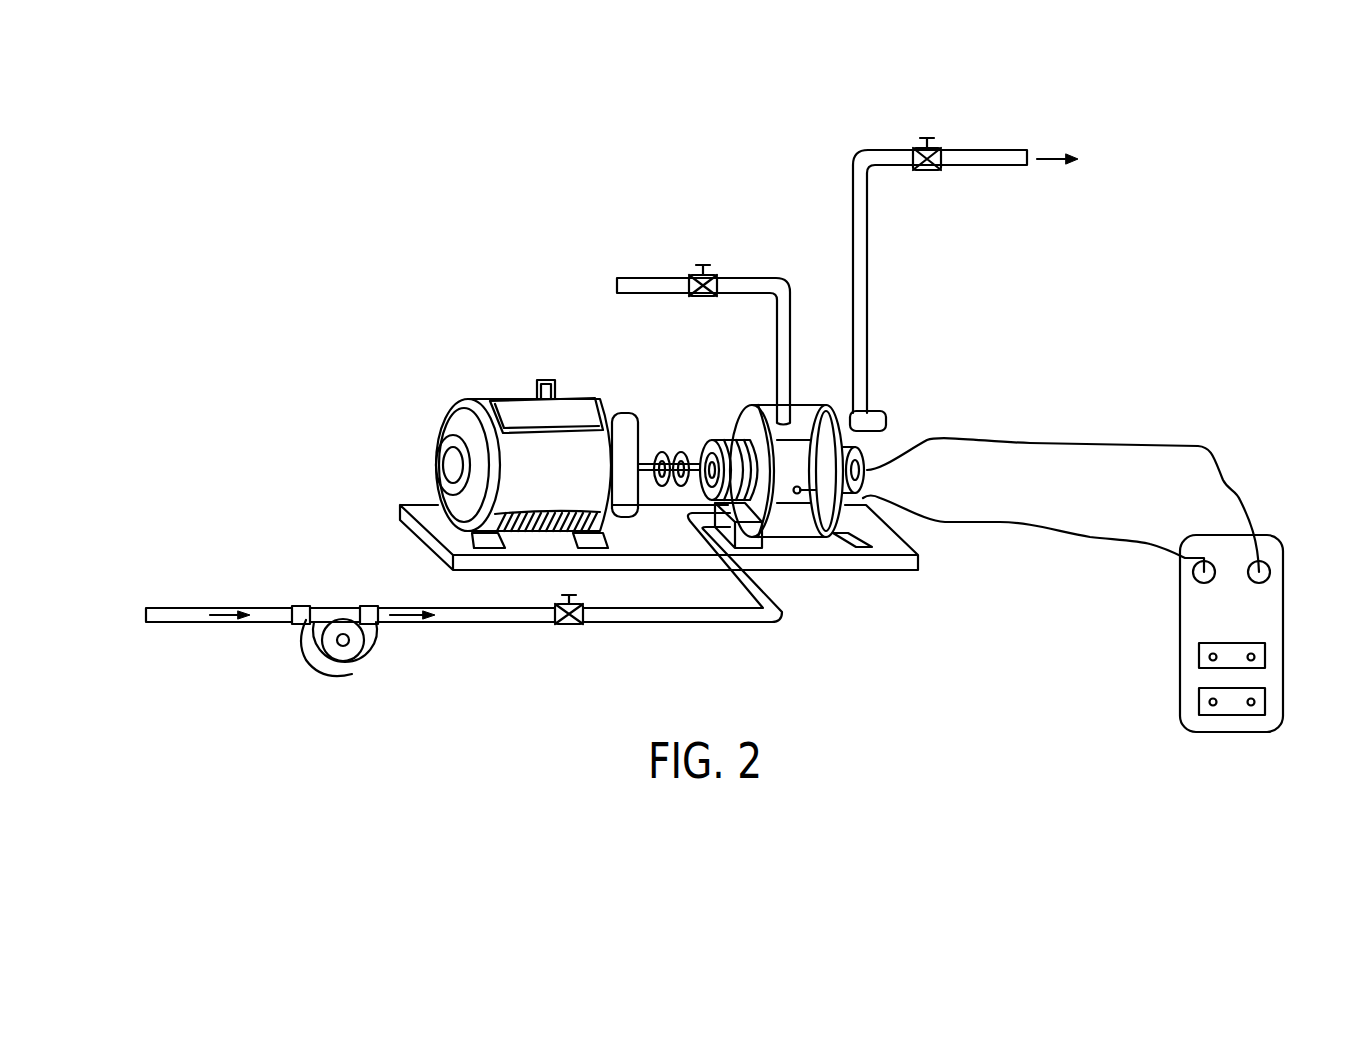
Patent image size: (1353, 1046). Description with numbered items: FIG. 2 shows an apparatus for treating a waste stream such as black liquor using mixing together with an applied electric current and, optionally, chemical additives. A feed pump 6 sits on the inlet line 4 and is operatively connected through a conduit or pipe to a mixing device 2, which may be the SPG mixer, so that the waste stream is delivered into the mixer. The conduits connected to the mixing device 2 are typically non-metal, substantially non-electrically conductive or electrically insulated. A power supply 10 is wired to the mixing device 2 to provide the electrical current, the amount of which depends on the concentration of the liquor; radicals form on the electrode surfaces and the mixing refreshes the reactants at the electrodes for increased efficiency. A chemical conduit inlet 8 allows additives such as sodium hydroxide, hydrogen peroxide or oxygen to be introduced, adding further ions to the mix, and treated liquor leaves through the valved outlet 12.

The mixing device 2 is at (897, 436).
The fluid inlet 4 is at (130, 615).
The feed pump 6 is at (383, 645).
The chemical conduit inlet 8 is at (618, 246).
The power supply 10 is at (1283, 617).
The outlet with valve 12 is at (1053, 143).